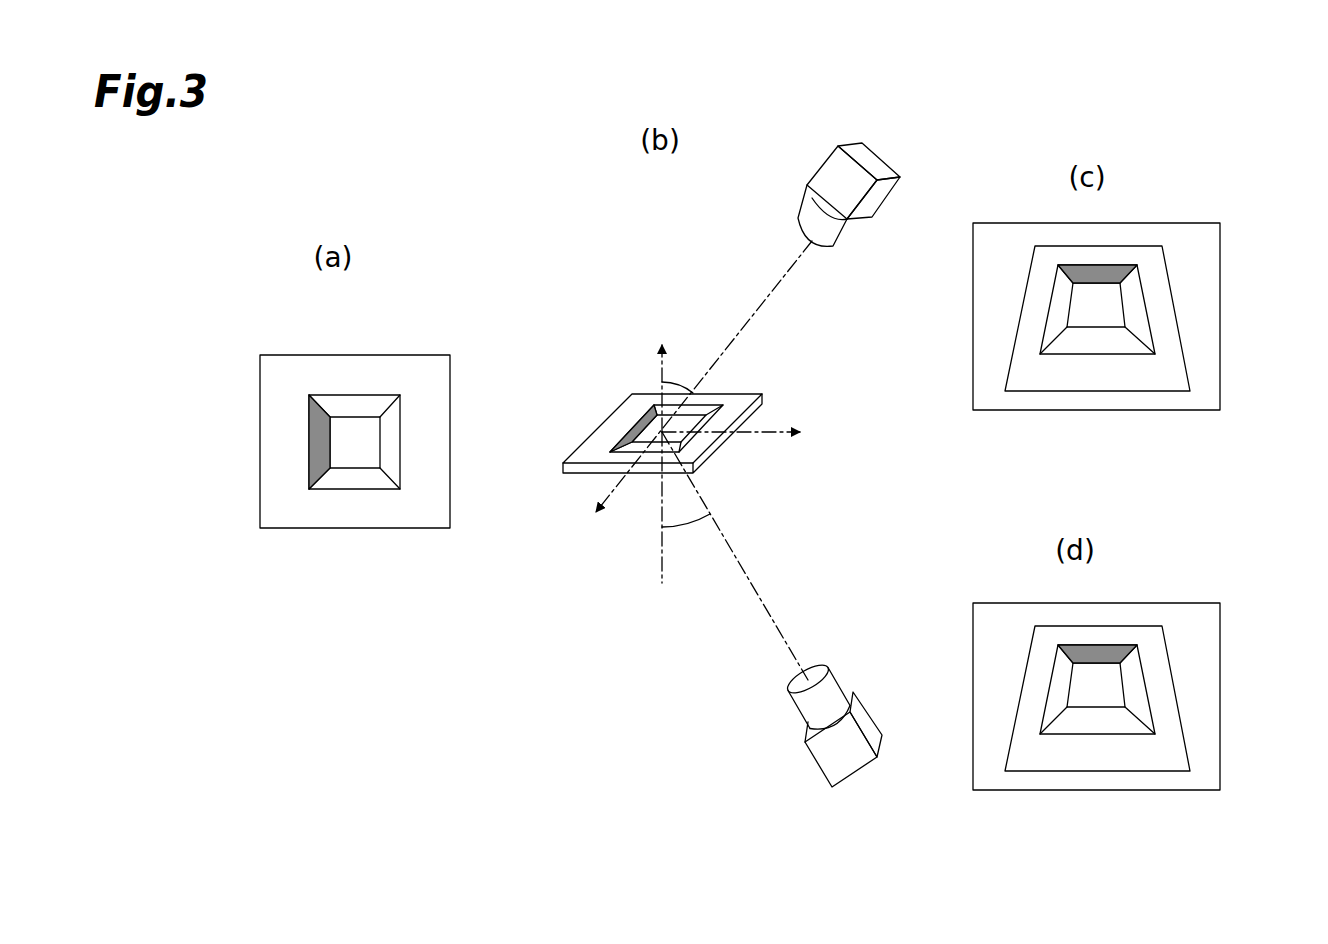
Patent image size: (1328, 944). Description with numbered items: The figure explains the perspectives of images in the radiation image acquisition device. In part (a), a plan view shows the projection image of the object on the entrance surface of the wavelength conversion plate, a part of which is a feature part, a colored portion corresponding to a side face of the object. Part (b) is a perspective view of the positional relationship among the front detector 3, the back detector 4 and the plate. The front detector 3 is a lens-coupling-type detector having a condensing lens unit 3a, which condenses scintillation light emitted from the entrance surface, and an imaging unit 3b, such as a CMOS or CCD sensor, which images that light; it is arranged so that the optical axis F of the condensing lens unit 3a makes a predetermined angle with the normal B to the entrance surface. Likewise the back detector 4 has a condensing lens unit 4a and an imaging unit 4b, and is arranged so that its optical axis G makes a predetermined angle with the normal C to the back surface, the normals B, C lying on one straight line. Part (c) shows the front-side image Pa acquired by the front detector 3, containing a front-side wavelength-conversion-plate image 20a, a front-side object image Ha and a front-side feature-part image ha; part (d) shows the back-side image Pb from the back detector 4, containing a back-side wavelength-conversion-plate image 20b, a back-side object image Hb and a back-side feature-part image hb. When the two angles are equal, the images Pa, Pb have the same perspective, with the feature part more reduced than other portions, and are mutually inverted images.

The front observation photodetector 3 is at (830, 166).
The condensing lens unit 3a is at (805, 208).
The imaging unit 3b is at (818, 173).
The back observation photodetector 4 is at (861, 731).
The condensing lens unit 4a is at (838, 680).
The imaging unit 4b is at (877, 723).
The front-side wavelength-conversion-plate image 20a is at (1157, 322).
The back-side wavelength-conversion-plate image 20b is at (1151, 704).
The front-side image Pa is at (1141, 300).
The back-side image Pb is at (1135, 690).
The front-side object image Ha is at (1099, 322).
The back-side object image Hb is at (1097, 704).
The front-side feature-part image ha is at (1110, 268).
The back-side feature-part image hb is at (1098, 648).
The normal B is at (657, 372).
The normal C is at (657, 563).
The optical axis F is at (768, 298).
The optical axis G is at (758, 620).